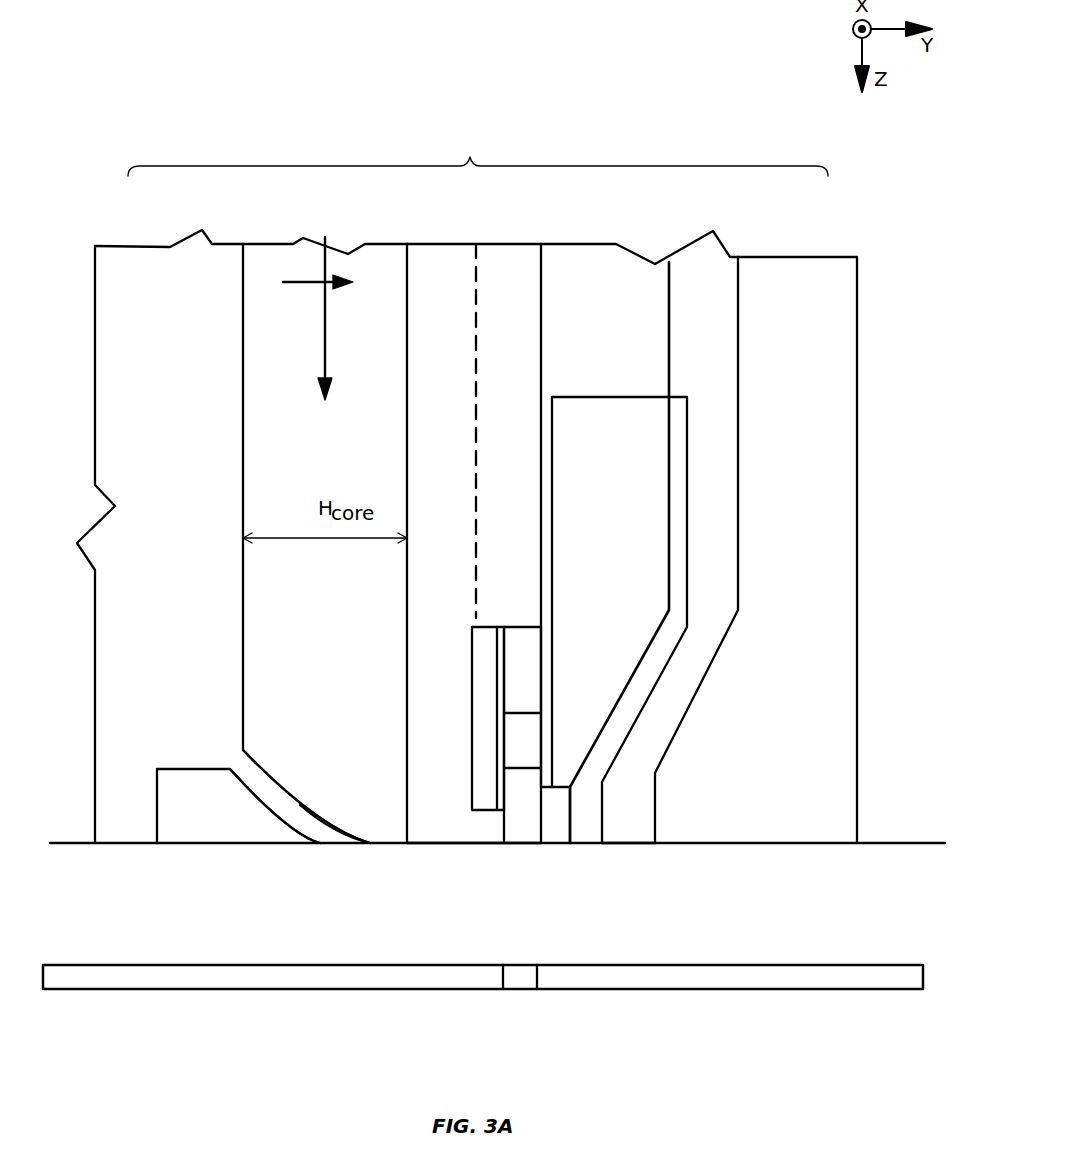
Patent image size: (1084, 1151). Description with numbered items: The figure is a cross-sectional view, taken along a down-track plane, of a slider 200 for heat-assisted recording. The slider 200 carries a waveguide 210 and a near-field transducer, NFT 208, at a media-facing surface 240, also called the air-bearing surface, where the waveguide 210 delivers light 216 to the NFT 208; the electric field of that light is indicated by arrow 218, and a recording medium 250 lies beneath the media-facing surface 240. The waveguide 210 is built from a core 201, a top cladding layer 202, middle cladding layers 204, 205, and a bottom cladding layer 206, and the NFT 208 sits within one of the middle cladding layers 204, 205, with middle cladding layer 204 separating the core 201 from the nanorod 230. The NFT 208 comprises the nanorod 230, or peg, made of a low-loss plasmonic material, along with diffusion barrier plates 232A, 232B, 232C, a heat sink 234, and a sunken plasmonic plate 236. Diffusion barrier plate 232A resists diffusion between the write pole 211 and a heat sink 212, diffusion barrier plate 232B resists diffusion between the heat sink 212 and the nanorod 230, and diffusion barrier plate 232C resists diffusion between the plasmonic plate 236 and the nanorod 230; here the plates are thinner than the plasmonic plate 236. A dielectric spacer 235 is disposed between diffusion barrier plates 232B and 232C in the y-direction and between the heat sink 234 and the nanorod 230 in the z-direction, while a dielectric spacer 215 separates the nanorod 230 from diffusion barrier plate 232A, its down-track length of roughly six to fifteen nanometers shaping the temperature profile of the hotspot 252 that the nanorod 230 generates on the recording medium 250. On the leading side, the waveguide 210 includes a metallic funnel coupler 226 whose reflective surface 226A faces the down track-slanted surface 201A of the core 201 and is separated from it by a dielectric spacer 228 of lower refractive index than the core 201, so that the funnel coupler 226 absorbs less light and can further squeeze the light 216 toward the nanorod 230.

The slider 200 is at (244, 100).
The waveguide 210 is at (478, 147).
The bottom cladding layer 206 is at (180, 252).
The core 201 is at (270, 252).
The down track-slanted surface 201A is at (342, 832).
The middle cladding layer 204 is at (428, 254).
The middle cladding layer 205 is at (503, 254).
The top cladding layer 202 is at (598, 254).
The light 216 is at (327, 303).
The arrow 218 is at (298, 285).
The heat sink 212 is at (630, 396).
The diffusion barrier plate 232A is at (688, 396).
The diffusion barrier plate 232B is at (548, 678).
The diffusion barrier plate 232C is at (500, 628).
The heat sink 234 is at (520, 633).
The dielectric spacer 235 is at (532, 733).
The plasmonic plate 236 is at (480, 650).
The nanorod 230 is at (505, 826).
The NFT 208 is at (482, 868).
The dielectric spacer 215 is at (555, 832).
The write pole 211 is at (637, 830).
The funnel coupler 226 is at (200, 830).
The reflective surface 226A is at (277, 818).
The dielectric spacer 228 is at (305, 822).
The media-facing surface 240 is at (888, 845).
The recording medium 250 is at (858, 963).
The hotspot 252 is at (527, 972).